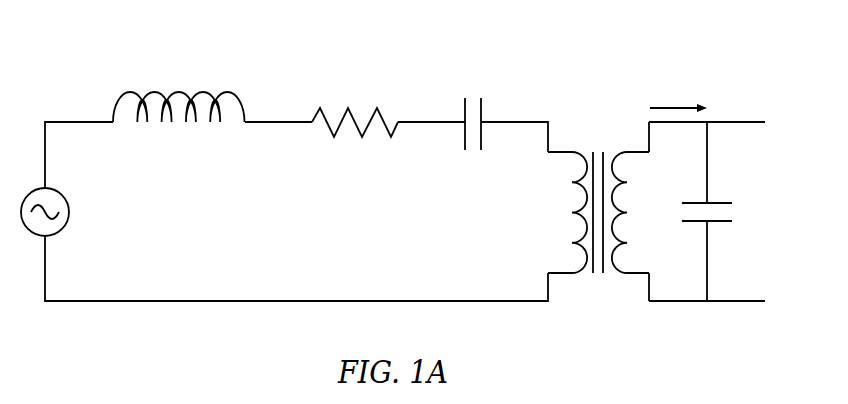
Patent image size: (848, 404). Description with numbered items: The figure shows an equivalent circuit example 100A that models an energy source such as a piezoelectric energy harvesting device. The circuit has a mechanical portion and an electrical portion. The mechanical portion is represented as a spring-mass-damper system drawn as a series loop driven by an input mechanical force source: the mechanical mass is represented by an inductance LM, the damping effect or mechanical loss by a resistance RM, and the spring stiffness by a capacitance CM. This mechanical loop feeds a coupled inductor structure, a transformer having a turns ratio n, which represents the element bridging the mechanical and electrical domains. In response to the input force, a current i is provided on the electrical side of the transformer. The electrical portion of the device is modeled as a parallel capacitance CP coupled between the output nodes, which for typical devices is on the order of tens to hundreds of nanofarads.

The equivalent circuit example 100A is at (393, 180).
The mechanical mass LM is at (179, 90).
The damping effect RM is at (355, 105).
The spring stiffness CM is at (469, 106).
The turns ratio n is at (598, 199).
The parallel capacitance CP is at (721, 211).
The current i is at (678, 96).